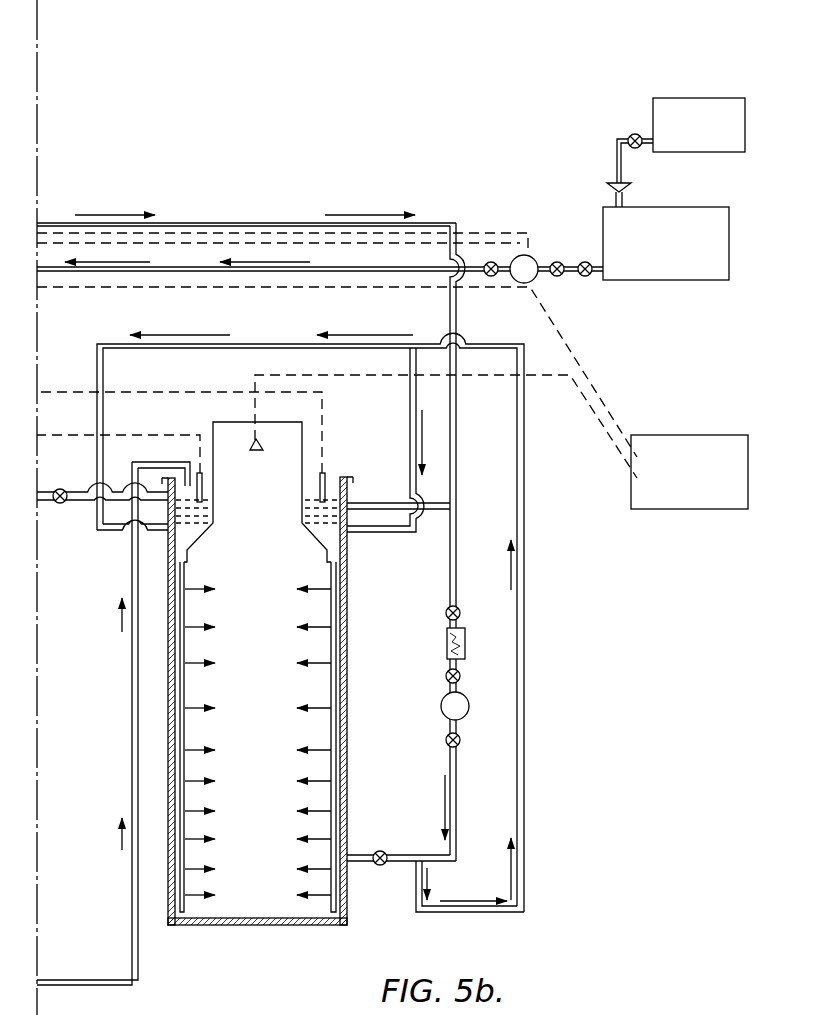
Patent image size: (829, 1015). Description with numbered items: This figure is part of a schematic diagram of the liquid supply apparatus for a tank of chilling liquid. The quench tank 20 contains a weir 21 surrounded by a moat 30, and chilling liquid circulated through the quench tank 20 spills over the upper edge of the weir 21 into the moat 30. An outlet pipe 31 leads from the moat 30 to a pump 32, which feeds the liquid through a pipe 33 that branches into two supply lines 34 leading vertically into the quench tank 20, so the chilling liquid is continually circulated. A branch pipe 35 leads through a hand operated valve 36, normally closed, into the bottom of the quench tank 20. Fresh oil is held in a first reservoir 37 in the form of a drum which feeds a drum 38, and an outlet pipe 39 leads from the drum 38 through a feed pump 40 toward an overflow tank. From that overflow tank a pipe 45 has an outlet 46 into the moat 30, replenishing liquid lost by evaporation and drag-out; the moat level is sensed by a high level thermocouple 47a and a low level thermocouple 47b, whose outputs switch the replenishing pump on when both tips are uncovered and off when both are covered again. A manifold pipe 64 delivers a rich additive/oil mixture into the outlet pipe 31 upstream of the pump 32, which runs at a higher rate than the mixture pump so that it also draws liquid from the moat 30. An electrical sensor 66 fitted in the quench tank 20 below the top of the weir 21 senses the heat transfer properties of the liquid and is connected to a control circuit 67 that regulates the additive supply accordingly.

The quench tank 20 is at (264, 900).
The weir 21 is at (306, 440).
The moat 30 is at (331, 505).
The outlet pipe 31 is at (380, 504).
The pump 32 is at (467, 709).
The pipe 33 is at (524, 430).
The supply lines 34 is at (181, 615).
The branch pipe 35 is at (400, 861).
The hand operated valve 36 is at (380, 849).
The first reservoir 37 is at (668, 106).
The drum 38 is at (697, 215).
The outlet pipe 39 is at (395, 272).
The feed pump 40 is at (533, 271).
The pipe 45 is at (136, 918).
The outlet 46 is at (185, 483).
The high level thermocouple 47a is at (204, 487).
The low level thermocouple 47b is at (320, 490).
The manifold pipe 64 is at (242, 222).
The electrical sensor 66 is at (249, 440).
The control circuit 67 is at (685, 493).